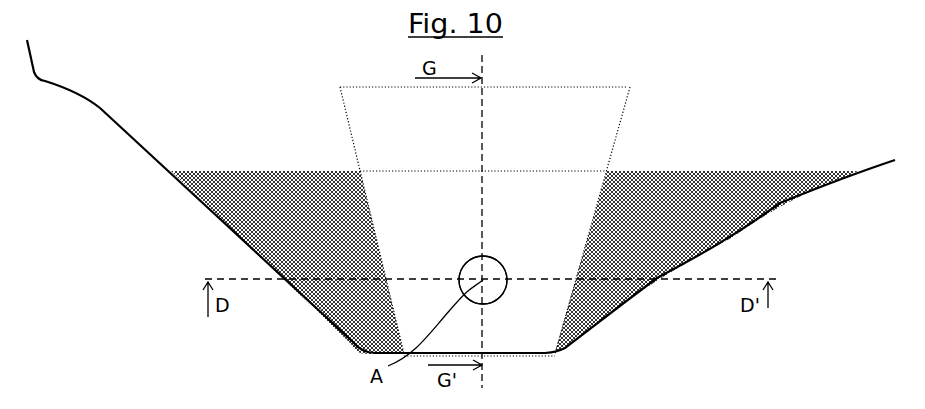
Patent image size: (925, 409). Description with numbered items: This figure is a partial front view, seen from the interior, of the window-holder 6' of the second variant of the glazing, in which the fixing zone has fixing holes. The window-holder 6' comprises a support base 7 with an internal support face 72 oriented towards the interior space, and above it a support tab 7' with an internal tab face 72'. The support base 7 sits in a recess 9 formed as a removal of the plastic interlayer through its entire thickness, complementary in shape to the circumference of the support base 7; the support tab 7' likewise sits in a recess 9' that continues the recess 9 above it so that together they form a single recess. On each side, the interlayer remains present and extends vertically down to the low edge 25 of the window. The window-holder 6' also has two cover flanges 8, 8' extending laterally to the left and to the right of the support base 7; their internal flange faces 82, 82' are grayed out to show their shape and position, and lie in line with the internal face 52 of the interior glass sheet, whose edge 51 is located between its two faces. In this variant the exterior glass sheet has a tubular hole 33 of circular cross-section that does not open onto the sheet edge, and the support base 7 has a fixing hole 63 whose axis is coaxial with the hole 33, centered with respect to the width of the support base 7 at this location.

The window-holder 6' is at (461, 196).
The internal face of the interior glass sheet 52 is at (281, 96).
The edge of the interior glass sheet 51 is at (648, 169).
The cover flange 8 is at (268, 161).
The cover flange 8' is at (787, 157).
The recess 9 is at (622, 334).
The recess 9' is at (384, 66).
The support base 7 is at (560, 367).
The support tab 7' is at (633, 83).
The internal support face 72 is at (481, 280).
The internal tab face 72' is at (485, 220).
The internal flange face 82 is at (287, 262).
The internal flange face 82' is at (706, 261).
The tubular hole 33 is at (472, 267).
The fixing hole 63 is at (472, 267).
The low edge of the window 25 is at (523, 355).